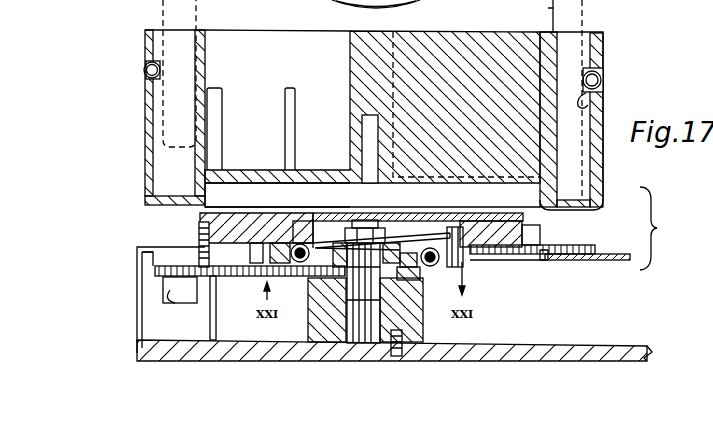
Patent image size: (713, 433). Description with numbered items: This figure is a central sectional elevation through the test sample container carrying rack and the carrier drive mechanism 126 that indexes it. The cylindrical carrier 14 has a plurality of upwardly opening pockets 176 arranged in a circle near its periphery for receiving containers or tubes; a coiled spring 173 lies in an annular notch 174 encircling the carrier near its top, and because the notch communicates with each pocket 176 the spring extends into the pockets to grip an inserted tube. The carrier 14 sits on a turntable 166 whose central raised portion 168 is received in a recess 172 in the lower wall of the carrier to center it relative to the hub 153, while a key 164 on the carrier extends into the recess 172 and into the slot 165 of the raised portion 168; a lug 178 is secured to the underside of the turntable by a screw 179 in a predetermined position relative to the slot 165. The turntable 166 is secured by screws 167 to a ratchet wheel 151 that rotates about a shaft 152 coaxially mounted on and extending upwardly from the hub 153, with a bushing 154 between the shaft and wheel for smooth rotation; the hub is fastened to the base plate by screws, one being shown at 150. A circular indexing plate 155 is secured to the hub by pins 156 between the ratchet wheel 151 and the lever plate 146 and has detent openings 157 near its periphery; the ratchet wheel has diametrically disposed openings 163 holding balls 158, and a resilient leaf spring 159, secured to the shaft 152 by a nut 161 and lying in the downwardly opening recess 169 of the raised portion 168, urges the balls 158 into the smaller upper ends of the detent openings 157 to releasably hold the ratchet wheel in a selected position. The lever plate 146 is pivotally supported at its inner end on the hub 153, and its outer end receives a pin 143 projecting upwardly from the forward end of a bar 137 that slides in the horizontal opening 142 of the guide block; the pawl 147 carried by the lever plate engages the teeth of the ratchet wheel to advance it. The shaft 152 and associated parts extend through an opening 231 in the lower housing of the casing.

The carrier 14 is at (140, 113).
The coiled spring 173 is at (144, 70).
The annular notch 174 is at (600, 78).
The pocket 176 is at (585, 106).
The lug 178 is at (190, 240).
The central raised portion 168 is at (197, 226).
The key 164 is at (528, 198).
The turntable 166 is at (568, 232).
The ratchet wheel 151 is at (478, 258).
The slot 165 is at (530, 235).
The opening 231 is at (547, 257).
The carrier drive mechanism 126 is at (140, 315).
The pin 143 is at (185, 263).
The bar 137 is at (183, 285).
The horizontal opening 142 is at (166, 303).
The pawl 147 is at (215, 288).
The lever plate 146 is at (262, 270).
The detent openings 157 is at (280, 266).
The balls 158 is at (300, 243).
The openings 163 is at (288, 235).
The bushing 154 is at (330, 240).
The recess 172 is at (235, 182).
The screw 179 is at (232, 220).
The shaft 152 is at (345, 228).
The nut 161 is at (368, 224).
The screw 150 is at (393, 360).
The pins 156 is at (317, 320).
The hub 153 is at (418, 325).
The recess 169 is at (395, 240).
The leaf spring 159 is at (425, 235).
The screws 167 is at (462, 232).
The indexing plate 155 is at (445, 263).